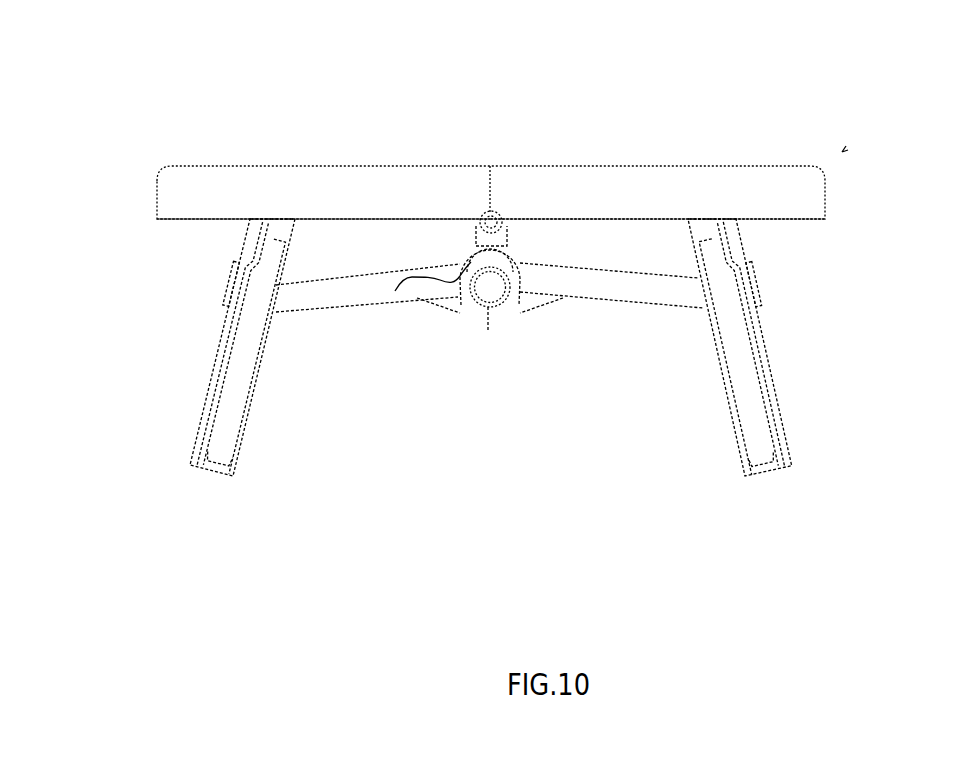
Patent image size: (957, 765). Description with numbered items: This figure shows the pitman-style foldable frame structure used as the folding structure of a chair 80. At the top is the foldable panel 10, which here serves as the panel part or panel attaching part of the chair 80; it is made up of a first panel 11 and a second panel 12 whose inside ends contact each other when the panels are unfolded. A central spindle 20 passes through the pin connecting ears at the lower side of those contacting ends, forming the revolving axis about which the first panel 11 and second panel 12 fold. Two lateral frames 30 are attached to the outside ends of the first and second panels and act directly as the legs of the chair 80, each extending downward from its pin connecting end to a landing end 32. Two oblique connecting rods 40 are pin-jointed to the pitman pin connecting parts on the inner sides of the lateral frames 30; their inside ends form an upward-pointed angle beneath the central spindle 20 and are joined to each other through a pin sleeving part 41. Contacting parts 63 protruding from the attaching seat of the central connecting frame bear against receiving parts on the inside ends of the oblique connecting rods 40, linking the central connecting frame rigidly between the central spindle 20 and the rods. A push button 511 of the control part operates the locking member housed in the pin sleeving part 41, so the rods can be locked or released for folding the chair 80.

The foldable panel 10 is at (590, 76).
The first panel 11 is at (395, 165).
The second panel 12 is at (612, 165).
The central spindle 20 is at (502, 215).
The lateral frame 30 is at (208, 383).
The landing end 32 is at (222, 475).
The oblique connecting rod 40 is at (318, 300).
The pin sleeving part 41 is at (488, 317).
The contacting part 63 is at (398, 291).
The push button 511 is at (492, 289).
The chair 80 is at (842, 152).